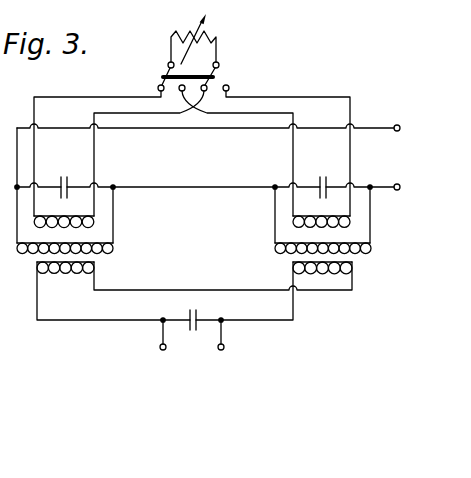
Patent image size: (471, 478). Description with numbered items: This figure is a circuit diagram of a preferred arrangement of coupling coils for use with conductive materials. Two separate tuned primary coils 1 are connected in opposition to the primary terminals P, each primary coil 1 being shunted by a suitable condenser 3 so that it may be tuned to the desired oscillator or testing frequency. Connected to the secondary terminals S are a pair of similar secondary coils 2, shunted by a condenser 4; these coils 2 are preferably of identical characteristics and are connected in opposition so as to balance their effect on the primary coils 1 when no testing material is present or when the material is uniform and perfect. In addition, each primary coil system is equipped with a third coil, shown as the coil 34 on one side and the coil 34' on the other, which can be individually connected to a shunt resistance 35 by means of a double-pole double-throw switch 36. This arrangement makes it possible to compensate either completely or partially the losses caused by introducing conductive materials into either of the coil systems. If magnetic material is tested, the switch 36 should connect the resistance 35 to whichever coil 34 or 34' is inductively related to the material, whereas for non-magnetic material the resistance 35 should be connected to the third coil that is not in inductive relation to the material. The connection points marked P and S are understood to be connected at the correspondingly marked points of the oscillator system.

The primary coil 1 is at (113, 247).
The secondary coil 2 is at (96, 263).
The condenser 3 is at (63, 177).
The condenser 4 is at (191, 310).
The third coil 34 is at (88, 191).
The third coil 34' is at (293, 189).
The shunt resistance 35 is at (207, 32).
The double-pole double-throw switch 36 is at (213, 73).
The primary terminals P is at (399, 134).
The secondary terminals S is at (167, 350).